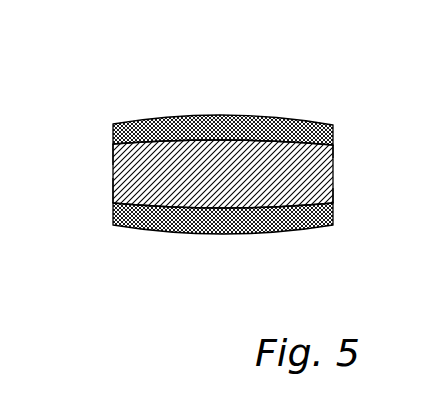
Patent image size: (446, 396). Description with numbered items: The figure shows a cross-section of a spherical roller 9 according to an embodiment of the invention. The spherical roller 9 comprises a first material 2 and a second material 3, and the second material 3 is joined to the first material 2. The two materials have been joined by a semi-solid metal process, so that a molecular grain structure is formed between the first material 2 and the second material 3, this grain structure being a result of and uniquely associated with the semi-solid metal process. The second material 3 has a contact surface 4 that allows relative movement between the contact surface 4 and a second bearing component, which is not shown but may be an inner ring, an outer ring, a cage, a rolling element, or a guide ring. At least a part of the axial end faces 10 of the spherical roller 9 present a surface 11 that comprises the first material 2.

The spherical roller 9 is at (96, 76).
The second material 3 is at (303, 118).
The first material 2 is at (334, 173).
The contact surface 4 is at (206, 233).
The axial end faces 10 is at (113, 165).
The surface 11 is at (113, 178).